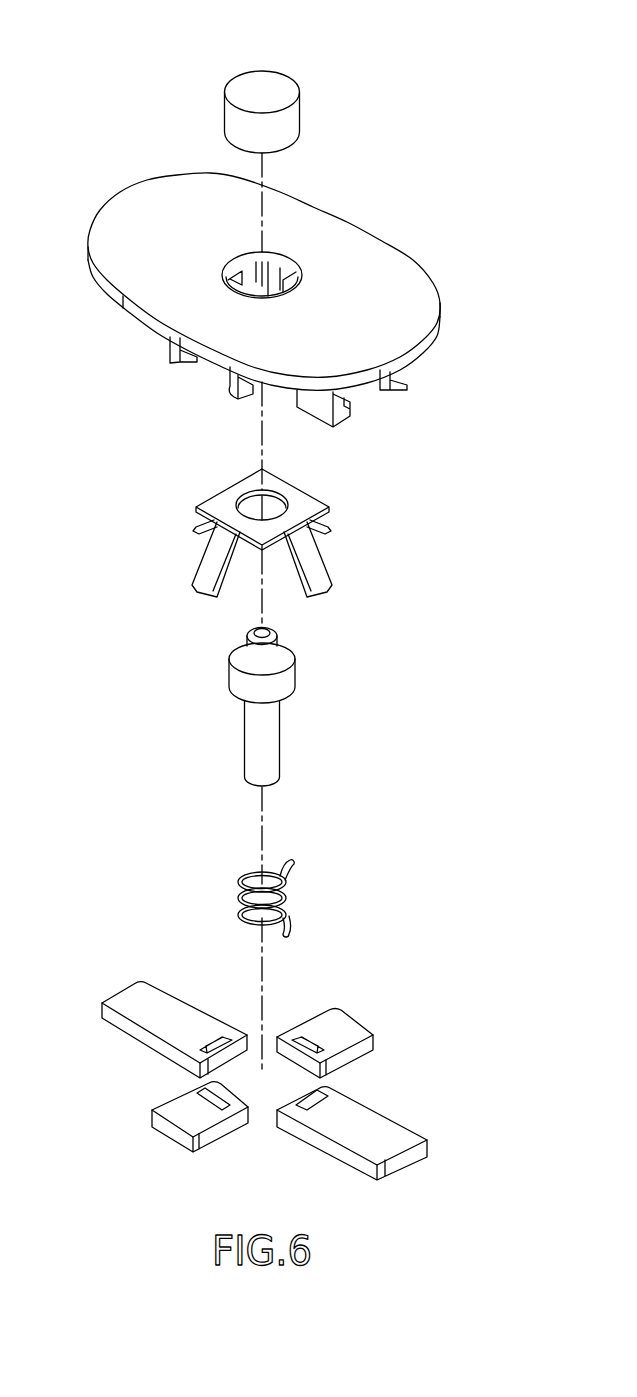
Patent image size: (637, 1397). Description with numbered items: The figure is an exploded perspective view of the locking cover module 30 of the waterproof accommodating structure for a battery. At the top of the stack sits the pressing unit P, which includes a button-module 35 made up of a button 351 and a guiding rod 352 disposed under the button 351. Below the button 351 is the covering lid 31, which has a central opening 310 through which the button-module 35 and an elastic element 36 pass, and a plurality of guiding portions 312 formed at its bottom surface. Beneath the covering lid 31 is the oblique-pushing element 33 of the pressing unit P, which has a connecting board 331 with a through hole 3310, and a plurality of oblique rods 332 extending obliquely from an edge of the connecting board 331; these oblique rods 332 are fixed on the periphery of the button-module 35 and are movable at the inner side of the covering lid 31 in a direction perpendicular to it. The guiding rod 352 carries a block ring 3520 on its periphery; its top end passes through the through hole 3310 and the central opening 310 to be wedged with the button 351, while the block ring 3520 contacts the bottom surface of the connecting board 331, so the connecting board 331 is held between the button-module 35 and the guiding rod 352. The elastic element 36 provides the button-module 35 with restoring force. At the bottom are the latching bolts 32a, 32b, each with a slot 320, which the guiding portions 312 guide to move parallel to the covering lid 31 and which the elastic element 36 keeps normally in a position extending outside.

The pressing unit P is at (297, 74).
The locking cover module 30 is at (404, 238).
The covering lid 31 is at (432, 345).
The central opening 310 is at (278, 262).
The guiding portions 312 is at (170, 352).
The oblique-pushing element 33 is at (200, 503).
The connecting board 331 is at (250, 482).
The through hole 3310 is at (277, 507).
The oblique rods 332 is at (207, 558).
The button-module 35 is at (135, 104).
The button 351 is at (242, 127).
The guiding rod 352 is at (253, 728).
The block ring 3520 is at (290, 681).
The elastic element 36 is at (290, 890).
The latching bolt 32a is at (353, 1032).
The latching bolt 32b is at (137, 993).
The block slots 320 is at (214, 1040).